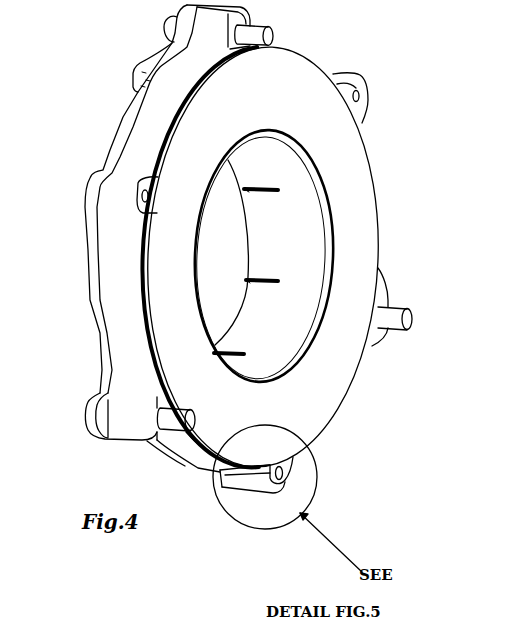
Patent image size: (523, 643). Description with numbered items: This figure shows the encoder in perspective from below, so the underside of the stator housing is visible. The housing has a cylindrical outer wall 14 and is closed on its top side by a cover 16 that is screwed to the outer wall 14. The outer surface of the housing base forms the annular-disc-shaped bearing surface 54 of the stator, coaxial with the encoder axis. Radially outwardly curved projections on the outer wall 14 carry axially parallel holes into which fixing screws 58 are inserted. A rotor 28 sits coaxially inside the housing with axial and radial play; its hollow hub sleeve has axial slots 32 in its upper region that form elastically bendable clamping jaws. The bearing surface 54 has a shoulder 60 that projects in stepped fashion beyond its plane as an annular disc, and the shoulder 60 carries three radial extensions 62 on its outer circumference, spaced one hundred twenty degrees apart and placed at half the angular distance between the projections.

The outer wall 14 is at (138, 143).
The cover 16 is at (93, 283).
The rotor 28 is at (308, 218).
The axial slots 32 is at (270, 277).
The bearing surface 54 is at (158, 381).
The fixing screws 58 is at (88, 407).
The shoulder 60 is at (170, 262).
The radial extensions 62 is at (155, 210).